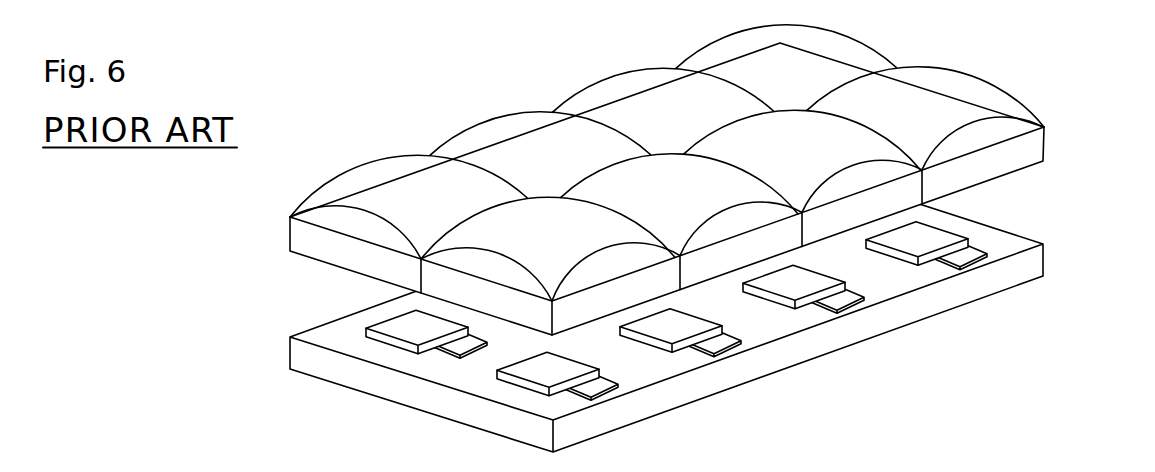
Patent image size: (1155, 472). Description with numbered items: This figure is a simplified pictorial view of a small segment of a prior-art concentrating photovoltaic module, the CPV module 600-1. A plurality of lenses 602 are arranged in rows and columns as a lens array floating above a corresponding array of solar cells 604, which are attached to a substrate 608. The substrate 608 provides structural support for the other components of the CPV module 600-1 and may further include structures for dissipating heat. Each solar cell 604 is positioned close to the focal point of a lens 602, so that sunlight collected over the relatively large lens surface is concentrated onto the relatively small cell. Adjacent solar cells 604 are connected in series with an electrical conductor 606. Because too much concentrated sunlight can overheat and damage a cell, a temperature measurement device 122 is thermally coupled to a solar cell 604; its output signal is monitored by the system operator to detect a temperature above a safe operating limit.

The CPV module 600-1 is at (432, 67).
The lens 602 is at (1043, 161).
The solar cell 604 is at (507, 383).
The electrical conductor 606 is at (627, 340).
The substrate 608 is at (1043, 276).
The temperature measurement device 122 is at (621, 396).